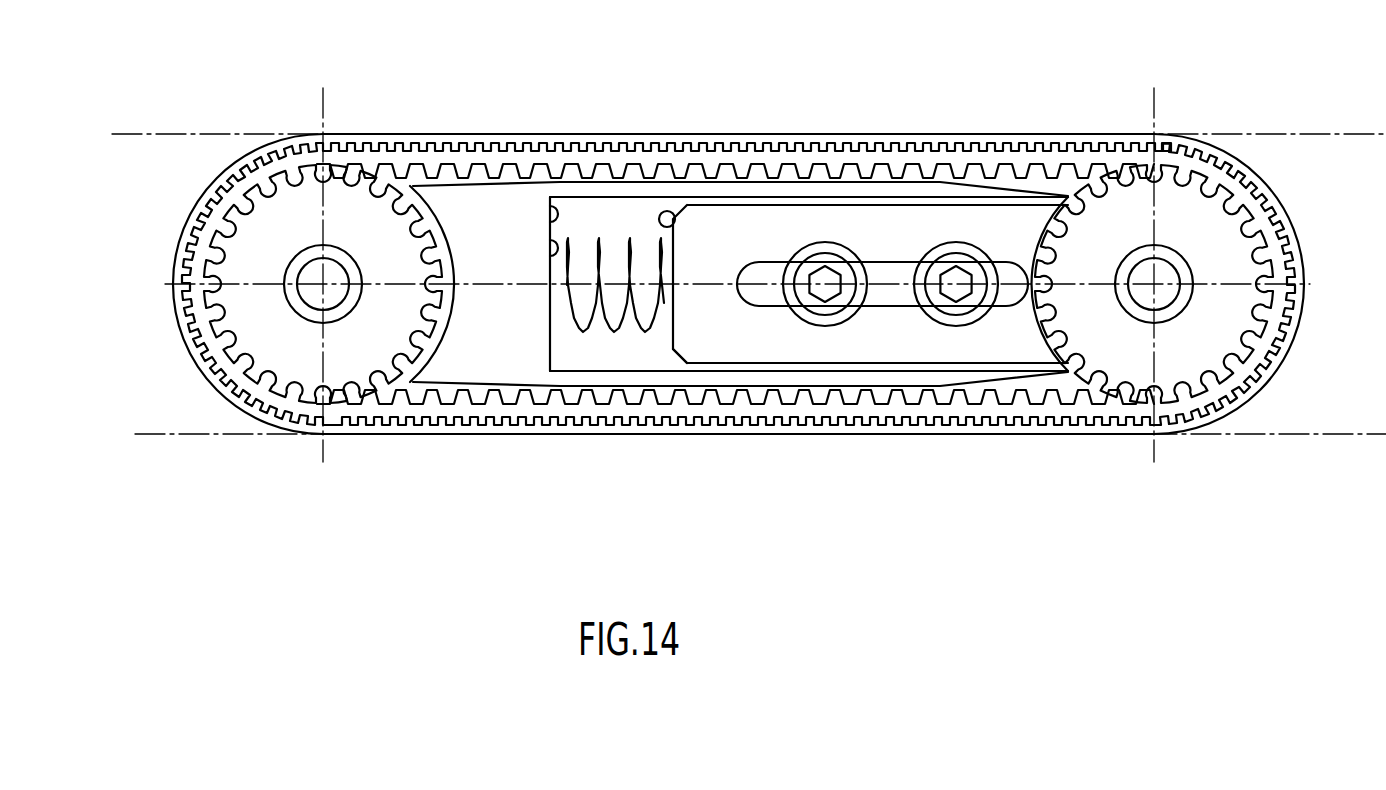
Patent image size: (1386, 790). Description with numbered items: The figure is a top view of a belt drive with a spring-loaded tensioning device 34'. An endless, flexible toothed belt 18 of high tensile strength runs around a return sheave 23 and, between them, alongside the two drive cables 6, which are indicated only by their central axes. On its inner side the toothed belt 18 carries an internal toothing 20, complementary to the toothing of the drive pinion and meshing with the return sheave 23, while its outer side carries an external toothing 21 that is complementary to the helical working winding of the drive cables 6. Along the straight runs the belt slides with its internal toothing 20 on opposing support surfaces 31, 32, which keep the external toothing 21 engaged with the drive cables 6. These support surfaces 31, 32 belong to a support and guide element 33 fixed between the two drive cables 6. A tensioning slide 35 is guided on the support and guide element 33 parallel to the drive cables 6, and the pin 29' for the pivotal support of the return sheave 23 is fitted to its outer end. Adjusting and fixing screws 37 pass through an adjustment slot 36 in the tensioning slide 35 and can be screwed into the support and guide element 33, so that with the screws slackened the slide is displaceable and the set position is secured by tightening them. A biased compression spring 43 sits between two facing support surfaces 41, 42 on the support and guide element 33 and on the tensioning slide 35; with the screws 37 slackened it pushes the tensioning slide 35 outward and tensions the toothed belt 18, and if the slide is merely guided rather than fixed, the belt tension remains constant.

The drive cable 6 is at (1320, 435).
The toothed belt 18 is at (738, 237).
The internal toothing 20 is at (452, 177).
The external toothing 21 is at (952, 143).
The return sheave 23 is at (1097, 238).
The pin 29' is at (1137, 292).
The support surface 31 is at (566, 184).
The support surface 32 is at (535, 387).
The support and guide element 33 is at (504, 259).
The tensioning device 34' is at (588, 428).
The tensioning slide 35 is at (779, 274).
The adjustment slot 36 is at (893, 295).
The adjusting and fixing screws 37 is at (952, 267).
The support surface 41 is at (546, 205).
The support surface 42 is at (680, 208).
The compression spring 43 is at (622, 313).